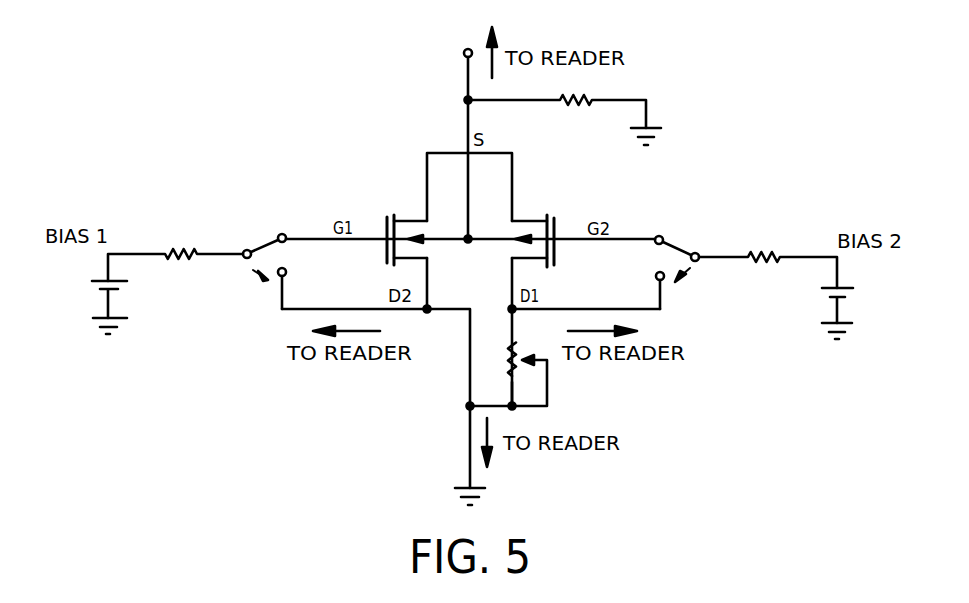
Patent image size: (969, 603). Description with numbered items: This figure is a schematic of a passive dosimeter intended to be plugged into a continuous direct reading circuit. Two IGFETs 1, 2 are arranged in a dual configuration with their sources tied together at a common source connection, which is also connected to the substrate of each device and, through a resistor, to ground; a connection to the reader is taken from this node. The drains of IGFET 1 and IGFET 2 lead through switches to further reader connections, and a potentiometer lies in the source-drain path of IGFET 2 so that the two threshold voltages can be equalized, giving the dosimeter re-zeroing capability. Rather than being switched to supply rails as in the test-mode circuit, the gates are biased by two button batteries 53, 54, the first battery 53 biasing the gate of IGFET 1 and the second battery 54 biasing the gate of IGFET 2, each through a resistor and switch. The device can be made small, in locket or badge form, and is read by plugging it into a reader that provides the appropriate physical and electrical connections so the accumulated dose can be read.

The IGFET 1 is at (386, 217).
The IGFET 2 is at (557, 218).
The button battery 53 is at (128, 289).
The button battery 54 is at (815, 293).